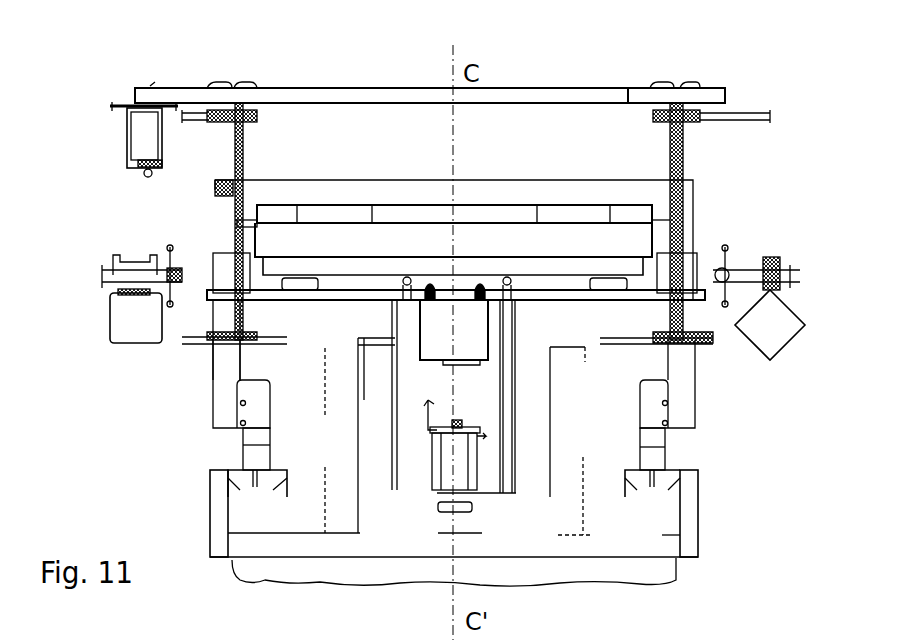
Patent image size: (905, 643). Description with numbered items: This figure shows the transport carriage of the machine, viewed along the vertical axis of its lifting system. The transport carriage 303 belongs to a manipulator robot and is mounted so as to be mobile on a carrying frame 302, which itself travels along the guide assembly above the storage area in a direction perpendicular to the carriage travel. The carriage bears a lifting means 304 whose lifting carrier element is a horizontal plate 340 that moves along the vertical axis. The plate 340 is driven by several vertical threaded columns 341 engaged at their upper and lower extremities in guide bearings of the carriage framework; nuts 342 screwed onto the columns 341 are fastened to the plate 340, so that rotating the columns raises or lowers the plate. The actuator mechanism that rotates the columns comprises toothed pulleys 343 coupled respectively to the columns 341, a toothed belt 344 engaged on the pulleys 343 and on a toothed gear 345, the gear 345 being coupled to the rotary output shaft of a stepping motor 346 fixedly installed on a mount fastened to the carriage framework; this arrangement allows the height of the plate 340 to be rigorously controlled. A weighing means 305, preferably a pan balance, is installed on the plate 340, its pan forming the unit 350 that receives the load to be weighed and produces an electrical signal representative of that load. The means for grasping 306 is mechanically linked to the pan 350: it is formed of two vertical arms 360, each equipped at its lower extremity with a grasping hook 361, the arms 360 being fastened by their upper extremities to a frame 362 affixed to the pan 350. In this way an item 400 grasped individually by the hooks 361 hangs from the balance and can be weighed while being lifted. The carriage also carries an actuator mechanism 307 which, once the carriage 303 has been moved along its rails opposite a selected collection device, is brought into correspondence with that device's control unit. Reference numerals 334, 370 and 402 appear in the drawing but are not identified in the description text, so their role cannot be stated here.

The carrying frame 302 is at (96, 333).
The transport carriage 303 is at (612, 347).
The lifting means 304 is at (177, 184).
The weighing means 305 is at (545, 268).
The means for grasping 306 is at (200, 393).
The actuator mechanism 307 is at (458, 477).
The foot bracket 334 is at (350, 503).
The lifting carrier element 340 is at (288, 422).
The vertical threaded columns 341 is at (234, 148).
The nuts 342 is at (217, 253).
The toothed pulleys 343 is at (262, 84).
The toothed belt 344 is at (415, 78).
The toothed gear 345 is at (158, 72).
The stepping motor 346 is at (128, 160).
The pan 350 is at (543, 227).
The vertical arms 360 is at (215, 415).
The grasping hook 361 is at (643, 462).
The frame 362 is at (358, 212).
The actuator cylinder 370 is at (440, 513).
The item 400 is at (435, 577).
The base post 402 is at (227, 520).